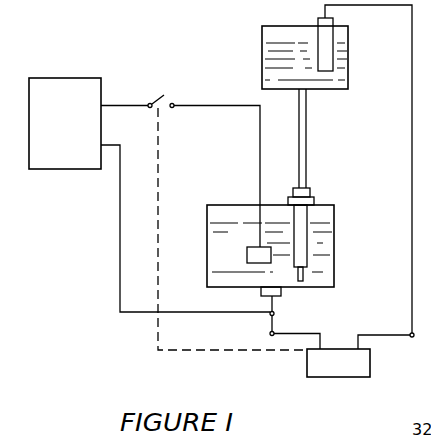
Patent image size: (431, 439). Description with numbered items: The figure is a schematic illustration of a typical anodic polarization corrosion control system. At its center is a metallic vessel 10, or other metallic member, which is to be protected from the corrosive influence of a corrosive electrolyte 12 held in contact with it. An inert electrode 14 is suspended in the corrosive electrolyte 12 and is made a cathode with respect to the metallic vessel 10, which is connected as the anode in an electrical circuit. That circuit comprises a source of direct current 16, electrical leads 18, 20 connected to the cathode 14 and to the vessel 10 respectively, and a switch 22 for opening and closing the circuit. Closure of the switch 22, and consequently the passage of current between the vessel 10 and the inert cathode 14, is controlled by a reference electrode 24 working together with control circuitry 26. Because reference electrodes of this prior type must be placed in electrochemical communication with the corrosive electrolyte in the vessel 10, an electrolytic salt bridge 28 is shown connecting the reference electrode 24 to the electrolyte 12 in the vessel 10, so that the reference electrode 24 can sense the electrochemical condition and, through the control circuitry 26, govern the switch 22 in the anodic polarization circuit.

The metallic vessel 10 is at (331, 217).
The corrosive electrolyte 12 is at (236, 242).
The inert electrode 14 is at (247, 258).
The source of direct current 16 is at (77, 134).
The electrical lead 18 is at (237, 105).
The electrical lead 20 is at (190, 321).
The switch 22 is at (162, 100).
The reference electrode 24 is at (326, 35).
The control circuitry 26 is at (338, 363).
The electrolytic salt bridge 28 is at (304, 148).